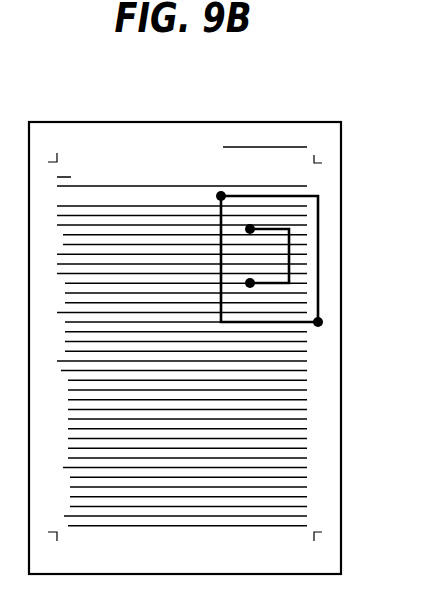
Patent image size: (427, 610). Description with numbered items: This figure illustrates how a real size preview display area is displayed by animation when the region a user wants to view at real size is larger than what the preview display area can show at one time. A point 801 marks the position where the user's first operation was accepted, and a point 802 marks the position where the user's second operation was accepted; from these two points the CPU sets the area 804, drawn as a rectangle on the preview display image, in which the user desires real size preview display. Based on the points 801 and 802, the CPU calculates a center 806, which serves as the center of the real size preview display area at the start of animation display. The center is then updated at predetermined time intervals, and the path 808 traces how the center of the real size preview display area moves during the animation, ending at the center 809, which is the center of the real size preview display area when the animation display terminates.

The point 801 is at (221, 193).
The point 802 is at (323, 322).
The area 804 is at (319, 212).
The center 806 is at (250, 226).
The path of the center of the real size preview display area 808 is at (290, 247).
The center 809 is at (250, 288).